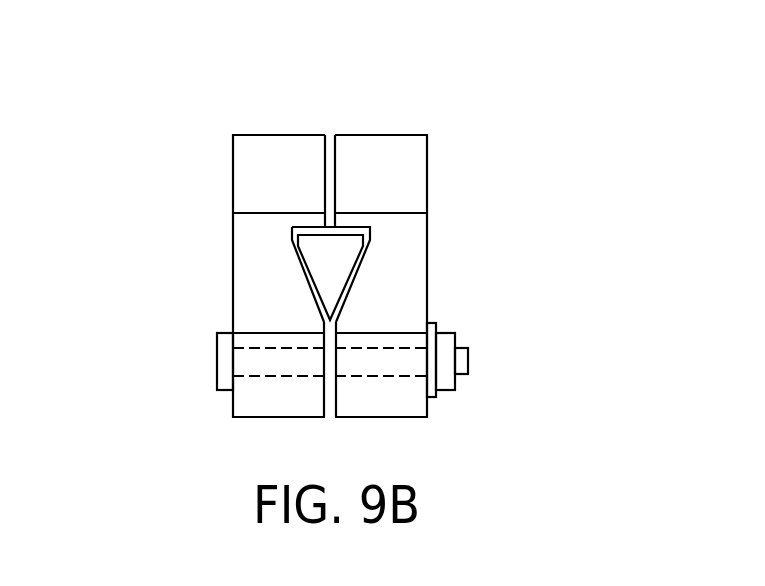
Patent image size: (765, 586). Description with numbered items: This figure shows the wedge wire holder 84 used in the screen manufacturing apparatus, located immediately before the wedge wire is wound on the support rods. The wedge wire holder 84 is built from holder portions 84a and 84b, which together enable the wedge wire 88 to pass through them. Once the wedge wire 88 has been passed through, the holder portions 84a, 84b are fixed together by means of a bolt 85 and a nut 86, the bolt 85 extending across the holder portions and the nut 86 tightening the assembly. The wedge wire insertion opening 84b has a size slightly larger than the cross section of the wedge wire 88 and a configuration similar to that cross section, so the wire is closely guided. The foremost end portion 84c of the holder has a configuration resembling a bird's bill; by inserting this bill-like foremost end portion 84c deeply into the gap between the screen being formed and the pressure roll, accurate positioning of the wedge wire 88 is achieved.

The wedge wire holder 84 is at (393, 115).
The holder portion 84a is at (250, 184).
The holder portion 84b is at (308, 271).
The foremost end portion 84c is at (418, 302).
The wedge wire 88 is at (349, 252).
The bolt 85 is at (222, 362).
The nut 86 is at (454, 366).